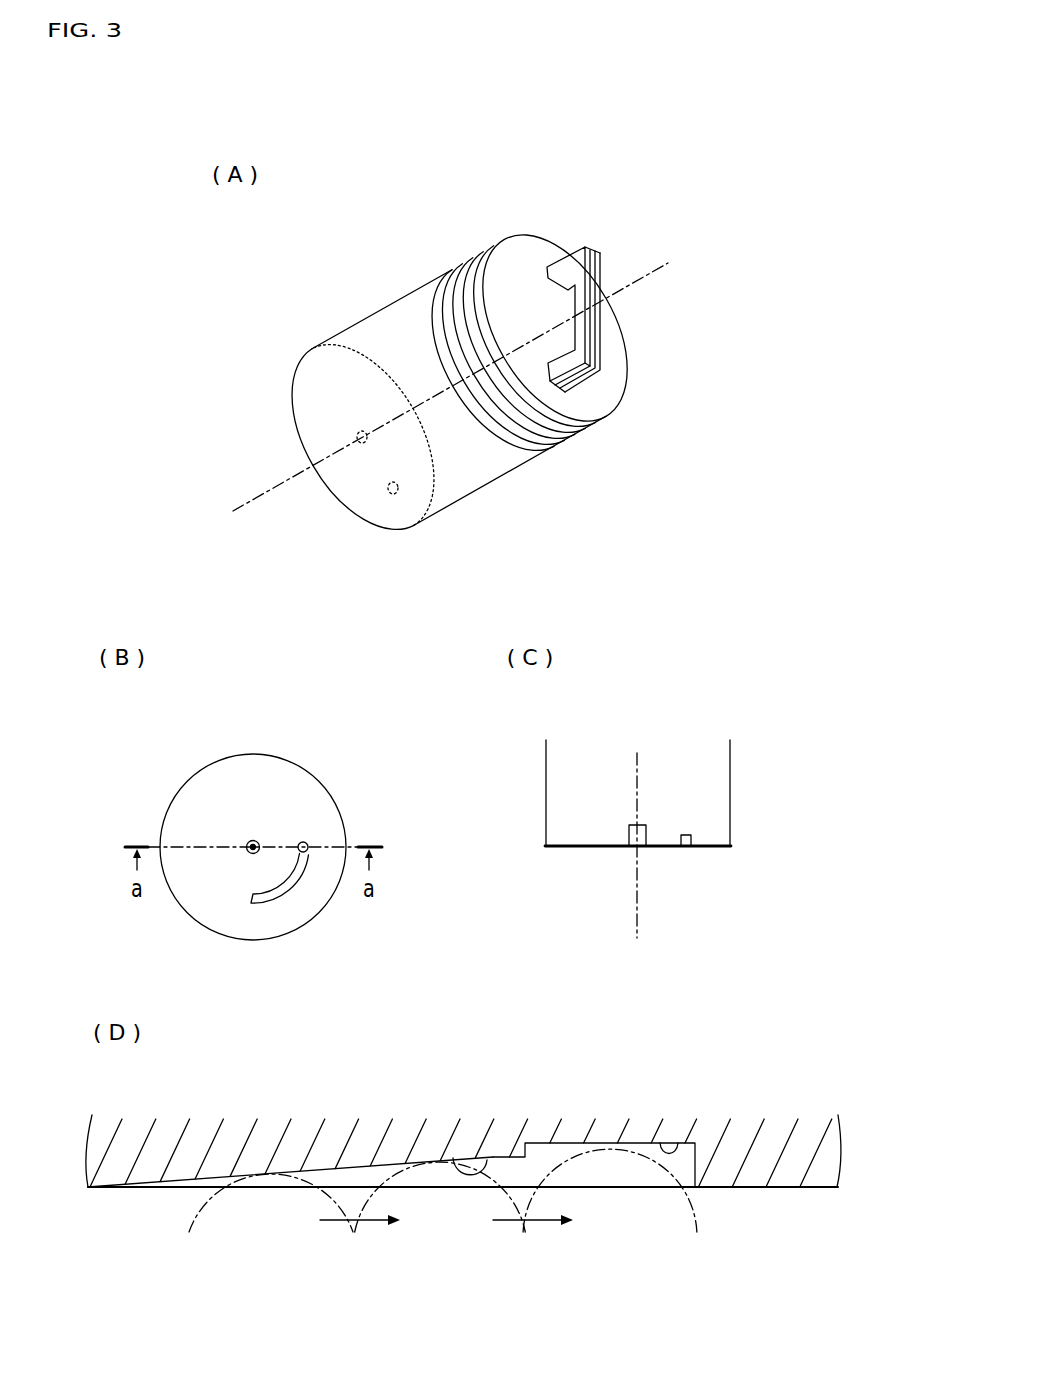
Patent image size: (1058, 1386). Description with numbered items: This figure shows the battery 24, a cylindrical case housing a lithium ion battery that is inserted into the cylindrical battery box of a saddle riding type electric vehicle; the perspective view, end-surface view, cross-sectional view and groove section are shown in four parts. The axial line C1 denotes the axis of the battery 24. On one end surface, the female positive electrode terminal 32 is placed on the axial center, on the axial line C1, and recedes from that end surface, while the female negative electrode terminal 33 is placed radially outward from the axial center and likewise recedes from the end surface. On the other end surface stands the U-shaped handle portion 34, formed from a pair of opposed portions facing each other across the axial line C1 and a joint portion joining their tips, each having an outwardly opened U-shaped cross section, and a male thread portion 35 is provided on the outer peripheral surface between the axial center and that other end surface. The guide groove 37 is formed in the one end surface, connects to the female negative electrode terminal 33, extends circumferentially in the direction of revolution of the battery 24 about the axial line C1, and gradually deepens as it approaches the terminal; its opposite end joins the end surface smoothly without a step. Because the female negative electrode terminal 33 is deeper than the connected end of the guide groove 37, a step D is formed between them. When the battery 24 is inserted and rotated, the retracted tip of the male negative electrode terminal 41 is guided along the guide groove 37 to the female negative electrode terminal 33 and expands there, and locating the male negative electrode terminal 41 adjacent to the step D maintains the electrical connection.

The battery 24 is at (558, 226).
The female positive electrode terminal 32 is at (362, 443).
The female negative electrode terminal 33 is at (393, 494).
The handle portion 34 is at (596, 332).
The male thread portion 35 is at (470, 250).
The guide groove 37 is at (286, 888).
The male negative electrode terminal 41 is at (209, 1201).
The axial line C1 is at (243, 505).
The step D is at (541, 1157).